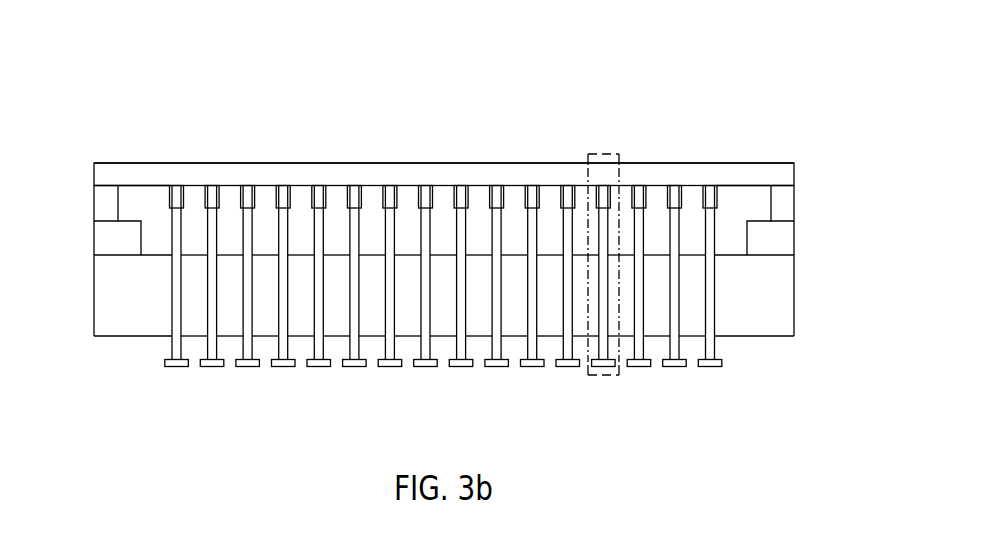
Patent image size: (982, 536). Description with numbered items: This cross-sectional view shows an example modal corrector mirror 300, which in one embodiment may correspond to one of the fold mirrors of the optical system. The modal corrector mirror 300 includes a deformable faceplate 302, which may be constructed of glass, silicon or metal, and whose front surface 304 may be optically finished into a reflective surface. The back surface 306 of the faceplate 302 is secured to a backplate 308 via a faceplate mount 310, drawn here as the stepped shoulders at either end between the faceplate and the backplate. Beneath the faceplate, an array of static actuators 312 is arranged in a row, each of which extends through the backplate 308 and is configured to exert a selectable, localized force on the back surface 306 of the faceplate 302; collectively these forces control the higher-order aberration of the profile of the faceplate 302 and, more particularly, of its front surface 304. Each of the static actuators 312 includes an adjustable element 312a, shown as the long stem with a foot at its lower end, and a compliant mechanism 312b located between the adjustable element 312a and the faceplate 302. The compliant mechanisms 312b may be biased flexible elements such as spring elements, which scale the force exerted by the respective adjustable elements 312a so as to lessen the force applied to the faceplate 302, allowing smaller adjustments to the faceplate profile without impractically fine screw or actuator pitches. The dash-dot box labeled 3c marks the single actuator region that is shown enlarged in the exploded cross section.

The modal corrector mirror 300 is at (435, 65).
The deformable faceplate 302 is at (384, 150).
The front surface 304 is at (137, 163).
The back surface 306 is at (133, 186).
The backplate 308 is at (130, 336).
The faceplate mount 310 is at (814, 213).
The static actuators 312 is at (491, 385).
The adjustable element 312a is at (495, 345).
The compliant mechanism 312b is at (499, 193).
The detail region of FIG. 3c is at (605, 154).